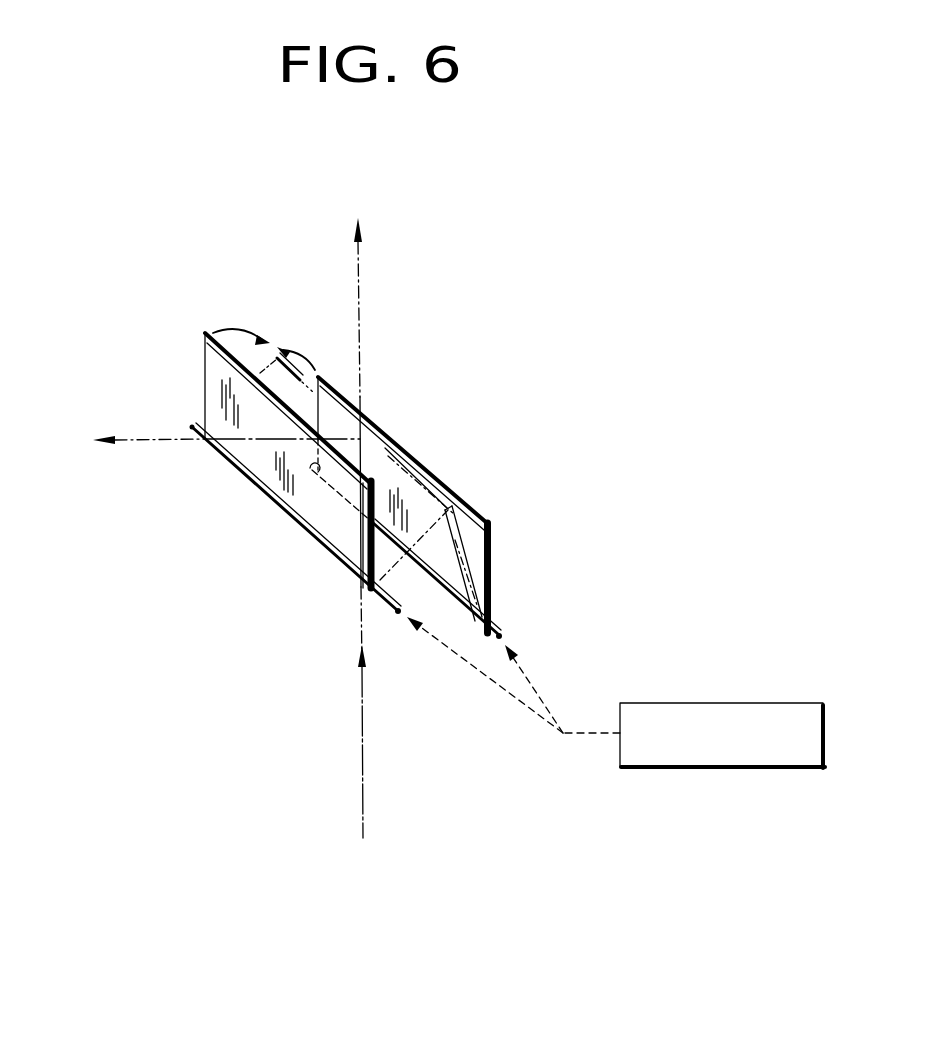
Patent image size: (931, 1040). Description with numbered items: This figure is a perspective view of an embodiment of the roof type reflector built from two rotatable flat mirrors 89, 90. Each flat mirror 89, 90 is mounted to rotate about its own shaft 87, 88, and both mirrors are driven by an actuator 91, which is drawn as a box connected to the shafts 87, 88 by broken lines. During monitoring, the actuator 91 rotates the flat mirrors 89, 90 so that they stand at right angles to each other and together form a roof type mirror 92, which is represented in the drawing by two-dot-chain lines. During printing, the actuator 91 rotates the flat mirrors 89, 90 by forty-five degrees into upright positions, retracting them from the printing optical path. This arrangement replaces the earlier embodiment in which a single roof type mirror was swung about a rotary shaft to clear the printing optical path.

The shaft 87 is at (392, 614).
The shaft 88 is at (496, 628).
The flat mirror 89 is at (203, 368).
The flat mirror 90 is at (458, 540).
The actuator 91 is at (697, 770).
The roof type mirror 92 is at (400, 438).